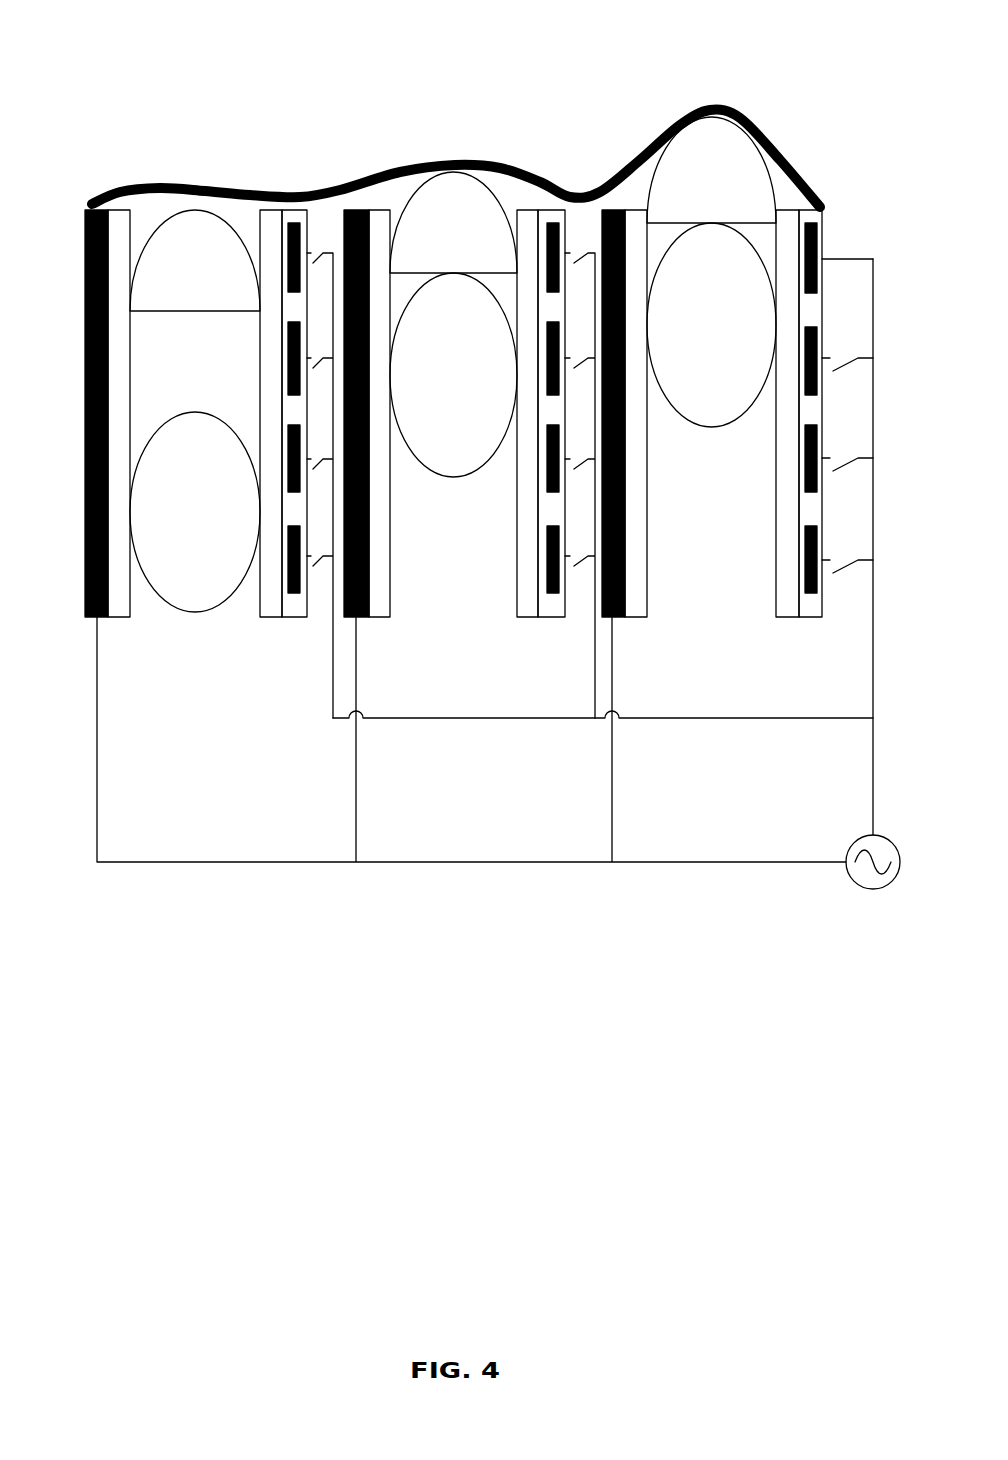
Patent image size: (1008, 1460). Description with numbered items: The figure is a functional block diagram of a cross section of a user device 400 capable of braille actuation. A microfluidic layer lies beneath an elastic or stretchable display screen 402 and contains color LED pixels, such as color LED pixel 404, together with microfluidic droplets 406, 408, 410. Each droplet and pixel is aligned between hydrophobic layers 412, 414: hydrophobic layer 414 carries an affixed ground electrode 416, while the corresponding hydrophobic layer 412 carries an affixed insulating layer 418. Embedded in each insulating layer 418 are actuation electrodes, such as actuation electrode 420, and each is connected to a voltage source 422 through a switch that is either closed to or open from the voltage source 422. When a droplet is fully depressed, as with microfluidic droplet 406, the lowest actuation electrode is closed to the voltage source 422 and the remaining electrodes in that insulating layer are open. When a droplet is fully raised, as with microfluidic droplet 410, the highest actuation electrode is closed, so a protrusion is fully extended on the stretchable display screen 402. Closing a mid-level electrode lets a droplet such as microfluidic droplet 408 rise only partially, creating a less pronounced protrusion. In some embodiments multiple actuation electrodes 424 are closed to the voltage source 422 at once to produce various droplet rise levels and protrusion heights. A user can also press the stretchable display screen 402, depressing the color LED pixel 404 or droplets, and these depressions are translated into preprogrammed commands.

The haptic actuator system 400 is at (116, 48).
The stretchable display screen 402 is at (101, 198).
The color LED pixel 404 is at (169, 312).
The microfluidic droplet 406 is at (195, 413).
The microfluidic droplet 408 is at (450, 478).
The microfluidic droplet 410 is at (705, 429).
The hydrophobic layer 412 is at (259, 616).
The hydrophobic layer 414 is at (124, 618).
The ground electrode 416 is at (86, 533).
The insulating layer 418 is at (296, 618).
The actuation electrode 420 is at (815, 493).
The voltage source 422 is at (853, 846).
The actuation electrodes 424 is at (840, 259).